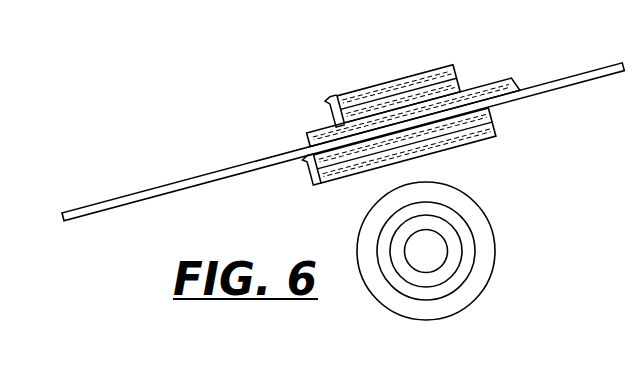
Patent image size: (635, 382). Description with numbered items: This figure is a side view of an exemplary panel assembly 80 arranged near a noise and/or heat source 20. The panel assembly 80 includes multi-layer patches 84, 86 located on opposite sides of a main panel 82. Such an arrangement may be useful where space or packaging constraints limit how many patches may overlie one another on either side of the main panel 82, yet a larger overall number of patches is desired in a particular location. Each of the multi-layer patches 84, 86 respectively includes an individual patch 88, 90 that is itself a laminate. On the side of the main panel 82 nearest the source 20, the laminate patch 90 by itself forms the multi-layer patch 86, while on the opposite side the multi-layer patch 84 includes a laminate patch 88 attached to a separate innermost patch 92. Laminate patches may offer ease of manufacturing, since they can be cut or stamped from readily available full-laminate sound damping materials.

The panel assembly 80 is at (164, 92).
The main panel 82 is at (117, 209).
The multi-layer patch 84 is at (468, 80).
The multi-layer patch 86 is at (508, 125).
The laminate patch 88 is at (330, 111).
The laminate patch 90 is at (304, 176).
The innermost patch 92 is at (517, 81).
The noise and/or heat source 20 is at (426, 251).